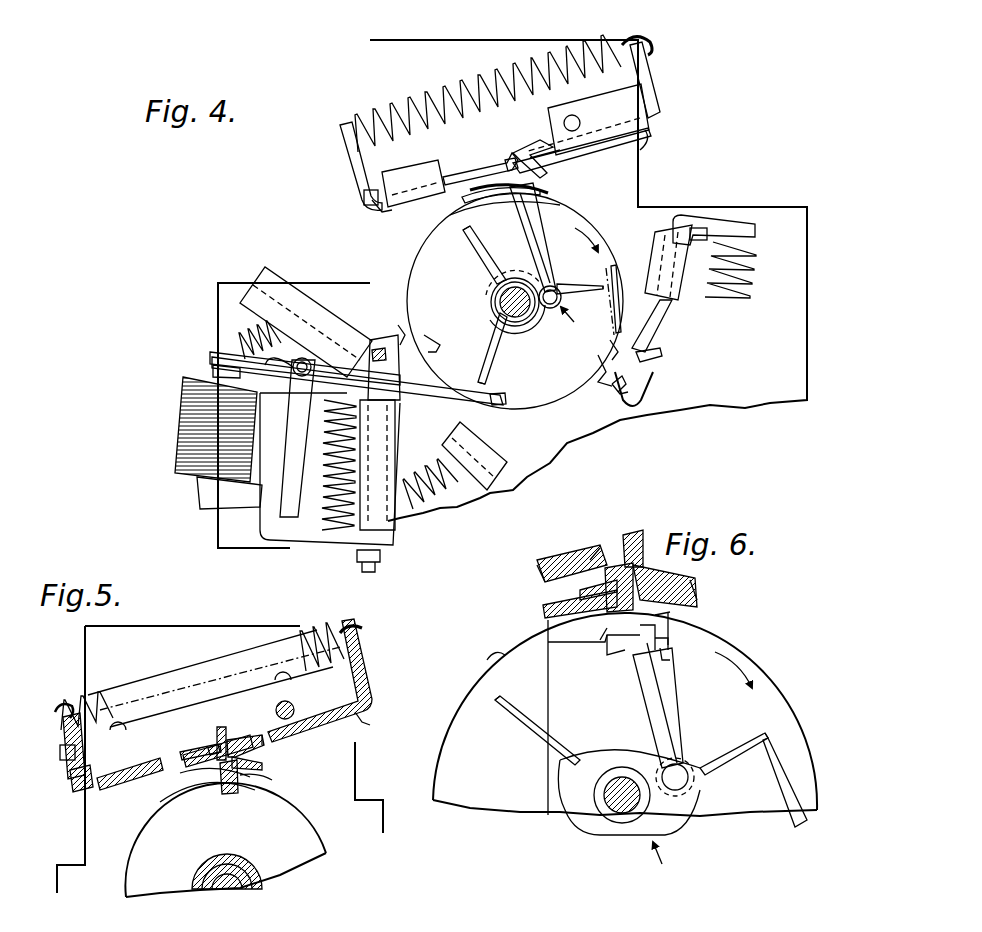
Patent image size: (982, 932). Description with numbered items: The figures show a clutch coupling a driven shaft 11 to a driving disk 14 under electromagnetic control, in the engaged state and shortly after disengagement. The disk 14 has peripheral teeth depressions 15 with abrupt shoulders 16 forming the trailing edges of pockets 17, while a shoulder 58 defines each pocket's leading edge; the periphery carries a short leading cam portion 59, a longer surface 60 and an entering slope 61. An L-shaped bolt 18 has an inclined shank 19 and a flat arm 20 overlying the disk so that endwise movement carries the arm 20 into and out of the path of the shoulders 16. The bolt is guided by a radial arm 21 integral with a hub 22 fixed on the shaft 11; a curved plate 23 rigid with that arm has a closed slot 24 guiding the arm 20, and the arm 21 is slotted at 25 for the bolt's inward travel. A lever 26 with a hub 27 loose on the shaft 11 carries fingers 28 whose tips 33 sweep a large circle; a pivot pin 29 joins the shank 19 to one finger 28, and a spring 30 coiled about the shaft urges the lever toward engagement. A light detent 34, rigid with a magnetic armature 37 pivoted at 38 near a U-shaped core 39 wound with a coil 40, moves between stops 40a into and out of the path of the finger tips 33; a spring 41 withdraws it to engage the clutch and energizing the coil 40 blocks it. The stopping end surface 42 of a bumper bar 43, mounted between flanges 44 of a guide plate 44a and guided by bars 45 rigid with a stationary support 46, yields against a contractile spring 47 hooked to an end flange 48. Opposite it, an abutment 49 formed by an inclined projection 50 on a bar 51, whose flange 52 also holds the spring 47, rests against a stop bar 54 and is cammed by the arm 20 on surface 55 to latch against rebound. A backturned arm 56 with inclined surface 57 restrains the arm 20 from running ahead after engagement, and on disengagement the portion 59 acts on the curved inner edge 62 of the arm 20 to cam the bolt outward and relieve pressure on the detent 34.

In FIG. 4, the driven shaft 11 is at (500, 318).
In FIG. 5, the driven shaft 11 is at (232, 878).
In FIG. 6, the driven shaft 11 is at (620, 812).
In FIG. 4, the disk 14 is at (536, 412).
In FIG. 5, the disk 14 is at (320, 856).
In FIG. 6, the disk 14 is at (472, 670).
In FIG. 4, the peripheral teeth depressions 15 is at (596, 358).
In FIG. 6, the peripheral teeth depressions 15 is at (672, 660).
In FIG. 4, the shoulders 16 is at (612, 342).
In FIG. 5, the shoulders 16 is at (220, 790).
In FIG. 6, the shoulders 16 is at (607, 645).
In FIG. 4, the pockets 17 is at (626, 390).
In FIG. 6, the pockets 17 is at (660, 628).
In FIG. 4, the bolt 18 is at (548, 196).
In FIG. 4, the shank 19 is at (550, 232).
In FIG. 6, the shank 19 is at (675, 712).
In FIG. 5, the arm 20 is at (228, 722).
In FIG. 6, the arm 20 is at (615, 565).
In FIG. 4, the radial arm 21 is at (482, 256).
In FIG. 6, the radial arm 21 is at (548, 690).
In FIG. 4, the hub 22 is at (538, 330).
In FIG. 5, the hub 22 is at (255, 860).
In FIG. 4, the curved plate 23 is at (455, 215).
In FIG. 5, the curved plate 23 is at (185, 790).
In FIG. 6, the curved plate 23 is at (545, 612).
In FIG. 6, the closed slot 24 is at (665, 610).
In FIG. 4, the slot 25 is at (520, 200).
In FIG. 6, the slot 25 is at (623, 660).
In FIG. 4, the lever 26 is at (574, 322).
In FIG. 6, the lever 26 is at (663, 862).
In FIG. 4, the hub 27 is at (498, 310).
In FIG. 6, the hub 27 is at (600, 815).
In FIG. 4, the fingers 28 is at (580, 288).
In FIG. 6, the fingers 28 is at (522, 748).
In FIG. 4, the pivot pin 29 is at (556, 288).
In FIG. 6, the pivot pin 29 is at (692, 790).
In FIG. 4, the spring 30 is at (494, 300).
In FIG. 4, the finger tips 33 is at (463, 233).
In FIG. 6, the finger tips 33 is at (497, 705).
In FIG. 4, the detent 34 is at (614, 272).
In FIG. 6, the detent 34 is at (798, 742).
In FIG. 4, the magnetic armature 37 is at (212, 358).
In FIG. 4, the pivot 38 is at (303, 360).
In FIG. 4, the U-shaped magnetic core 39 is at (210, 376).
In FIG. 4, the energizing coil 40 is at (183, 412).
In FIG. 4, the stops 40a is at (380, 338).
In FIG. 4, the spring 41 is at (340, 427).
In FIG. 4, the end surface 42 is at (515, 152).
In FIG. 5, the end surface 42 is at (265, 745).
In FIG. 6, the end surface 42 is at (637, 532).
In FIG. 4, the bumper bar 43 is at (548, 138).
In FIG. 5, the bumper bar 43 is at (262, 733).
In FIG. 4, the flanges 44 is at (652, 98).
In FIG. 5, the flanges 44 is at (365, 662).
In FIG. 4, the guide plate 44a is at (375, 212).
In FIG. 5, the guide plate 44a is at (362, 722).
In FIG. 4, the bars 45 is at (652, 122).
In FIG. 5, the bars 45 is at (292, 702).
In FIG. 4, the stationary support 46 is at (474, 46).
In FIG. 5, the stationary support 46 is at (356, 772).
In FIG. 4, the contractile spring 47 is at (437, 100).
In FIG. 5, the contractile spring 47 is at (337, 618).
In FIG. 4, the end flange 48 is at (655, 62).
In FIG. 5, the end flange 48 is at (363, 628).
In FIG. 4, the abutment 49 is at (505, 160).
In FIG. 5, the abutment 49 is at (210, 745).
In FIG. 6, the abutment 49 is at (590, 560).
In FIG. 4, the inclined projection 50 is at (503, 165).
In FIG. 5, the inclined projection 50 is at (195, 750).
In FIG. 6, the inclined projection 50 is at (545, 560).
In FIG. 4, the bar 51 is at (440, 172).
In FIG. 5, the bar 51 is at (140, 762).
In FIG. 4, the flange 52 is at (343, 160).
In FIG. 5, the flange 52 is at (60, 726).
In FIG. 4, the stop bar 54 is at (362, 190).
In FIG. 5, the stop bar 54 is at (65, 760).
In FIG. 4, the surface 55 is at (470, 196).
In FIG. 5, the surface 55 is at (182, 775).
In FIG. 6, the surface 55 is at (540, 572).
In FIG. 5, the backturned arm 56 is at (264, 767).
In FIG. 6, the backturned arm 56 is at (660, 570).
In FIG. 6, the inclined surface 57 is at (690, 578).
In FIG. 4, the shoulder 58 is at (610, 380).
In FIG. 5, the shoulder 58 is at (252, 786).
In FIG. 6, the shoulder 58 is at (668, 642).
In FIG. 4, the leading portion 59 is at (634, 345).
In FIG. 6, the leading portion 59 is at (600, 640).
In FIG. 4, the surface 60 is at (603, 240).
In FIG. 6, the surface 60 is at (495, 662).
In FIG. 4, the entering slope 61 is at (450, 333).
In FIG. 6, the entering slope 61 is at (722, 645).
In FIG. 6, the inner edge 62 is at (582, 594).